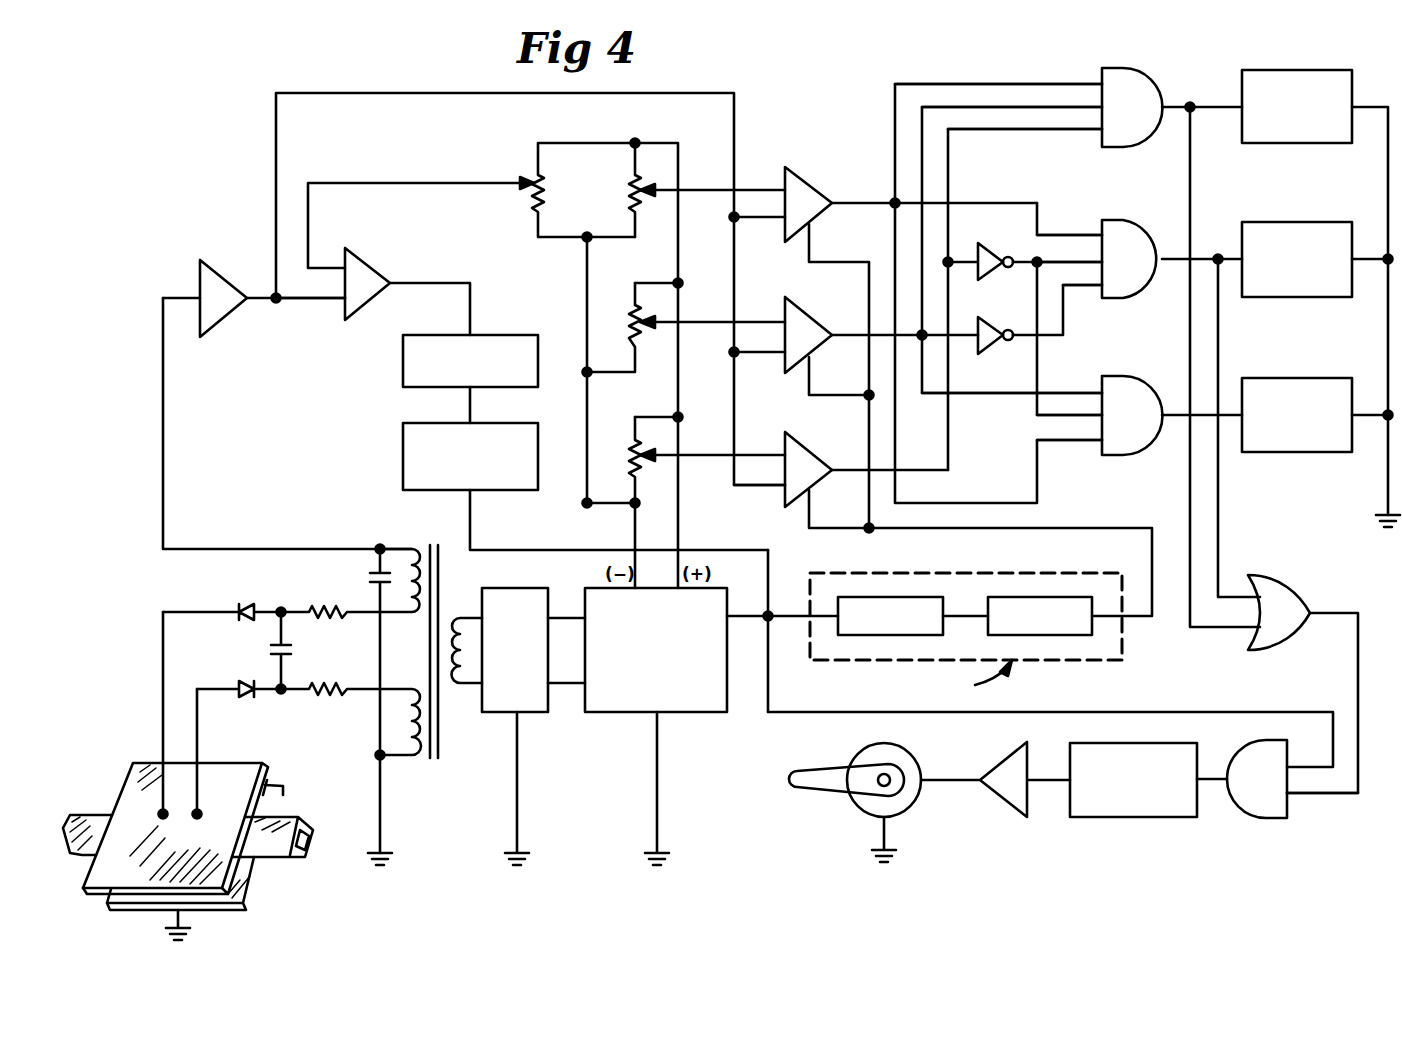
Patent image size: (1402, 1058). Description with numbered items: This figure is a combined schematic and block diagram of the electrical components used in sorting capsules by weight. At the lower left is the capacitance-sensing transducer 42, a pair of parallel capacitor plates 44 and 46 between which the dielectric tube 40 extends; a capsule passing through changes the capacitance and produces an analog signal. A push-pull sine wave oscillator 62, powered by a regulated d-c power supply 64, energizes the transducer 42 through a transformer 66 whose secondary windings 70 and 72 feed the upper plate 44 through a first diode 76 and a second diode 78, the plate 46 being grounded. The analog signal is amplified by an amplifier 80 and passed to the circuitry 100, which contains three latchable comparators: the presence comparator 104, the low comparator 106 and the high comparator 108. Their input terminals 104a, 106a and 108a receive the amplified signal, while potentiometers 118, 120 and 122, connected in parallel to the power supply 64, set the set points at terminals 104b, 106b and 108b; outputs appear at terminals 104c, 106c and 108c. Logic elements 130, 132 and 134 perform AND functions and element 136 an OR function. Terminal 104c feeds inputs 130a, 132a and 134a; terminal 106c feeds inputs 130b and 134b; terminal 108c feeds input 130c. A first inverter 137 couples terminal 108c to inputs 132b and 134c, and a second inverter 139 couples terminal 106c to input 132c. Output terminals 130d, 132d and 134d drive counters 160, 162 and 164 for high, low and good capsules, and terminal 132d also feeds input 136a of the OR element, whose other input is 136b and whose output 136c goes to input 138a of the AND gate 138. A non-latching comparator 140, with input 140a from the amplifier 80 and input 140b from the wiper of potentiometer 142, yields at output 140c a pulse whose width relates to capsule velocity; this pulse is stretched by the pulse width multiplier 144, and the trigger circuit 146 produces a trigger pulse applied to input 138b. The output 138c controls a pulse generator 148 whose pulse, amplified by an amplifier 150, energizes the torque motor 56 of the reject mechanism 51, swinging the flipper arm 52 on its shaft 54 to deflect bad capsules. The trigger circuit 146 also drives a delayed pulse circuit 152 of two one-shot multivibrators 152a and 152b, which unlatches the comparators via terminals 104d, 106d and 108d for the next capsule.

The dielectric tube 40 is at (295, 815).
The capacitance-sensing transducer 42 is at (189, 829).
The capacitor plate 44 is at (240, 765).
The capacitor plate 46 is at (244, 866).
The reject mechanism 51 is at (873, 787).
The flipper arm 52 is at (810, 790).
The oscillatory shaft 54 is at (893, 788).
The torque or stepping motor 56 is at (858, 748).
The push-pull sine wave oscillator 62 is at (537, 712).
The regulated d-c power supply 64 is at (700, 712).
The transformer 66 is at (437, 760).
The secondary winding 70 is at (405, 560).
The secondary winding 72 is at (408, 695).
The first diode 76 is at (248, 606).
The second diode 78 is at (240, 684).
The amplifier 80 is at (200, 268).
The circuitry 100 is at (805, 110).
The latchable comparator circuit 104 is at (812, 178).
The input terminal 104a is at (785, 233).
The input terminal 104b is at (785, 188).
The output terminal 104c is at (838, 200).
The unlatch terminal 104d is at (815, 228).
The latchable comparator circuit 106 is at (805, 312).
The input terminal 106a is at (785, 365).
The input terminal 106b is at (785, 320).
The output terminal 106c is at (838, 332).
The unlatch terminal 106d is at (813, 358).
The latchable comparator circuit 108 is at (805, 447).
The input terminal 108a is at (782, 493).
The input terminal 108b is at (785, 453).
The output terminal 108c is at (838, 465).
The unlatch terminal 108d is at (810, 505).
The adjustable potentiometer 118 is at (628, 188).
The potentiometer 120 is at (628, 318).
The potentiometer 122 is at (628, 448).
The AND logic element 130 is at (1122, 66).
The input terminal 130a is at (1100, 80).
The input terminal 130b is at (1100, 100).
The input terminal 130c is at (1098, 136).
The output terminal 130d is at (1160, 95).
The AND logic element 132 is at (1115, 218).
The input terminal 132a is at (1100, 232).
The input terminal 132b is at (1100, 268).
The input terminal 132c is at (1098, 295).
The output terminal 132d is at (1168, 252).
The AND logic element 134 is at (1135, 375).
The input terminal 134a is at (1098, 450).
The input terminal 134b is at (1100, 390).
The input terminal 134c is at (1098, 418).
The output terminal 134d is at (1166, 425).
The OR logic element 136 is at (1292, 585).
The input terminal 136a is at (1262, 580).
The input terminal 136b is at (1252, 632).
The output terminal 136c is at (1318, 605).
The first logic inverter 137 is at (990, 245).
The AND logic element 138 is at (1255, 820).
The input terminal 138a is at (1290, 798).
The input terminal 138b is at (1290, 760).
The output terminal 138c is at (1228, 775).
The second inverter 139 is at (992, 320).
The non-latching comparator 140 is at (368, 255).
The input terminal 140a is at (338, 308).
The input terminal 140b is at (340, 260).
The output terminal 140c is at (395, 280).
The potentiometer 142 is at (533, 200).
The pulse width multiplier 144 is at (403, 350).
The trigger circuit 146 is at (403, 455).
The pulse generator 148 is at (1132, 817).
The amplifier 150 is at (1012, 810).
The delayed pulse circuit 152 is at (945, 616).
The one-shot multivibrator 152a is at (912, 597).
The one-shot multivibrator 152b is at (1045, 597).
The counter 160 is at (1297, 70).
The counter 162 is at (1287, 222).
The counter 164 is at (1285, 378).